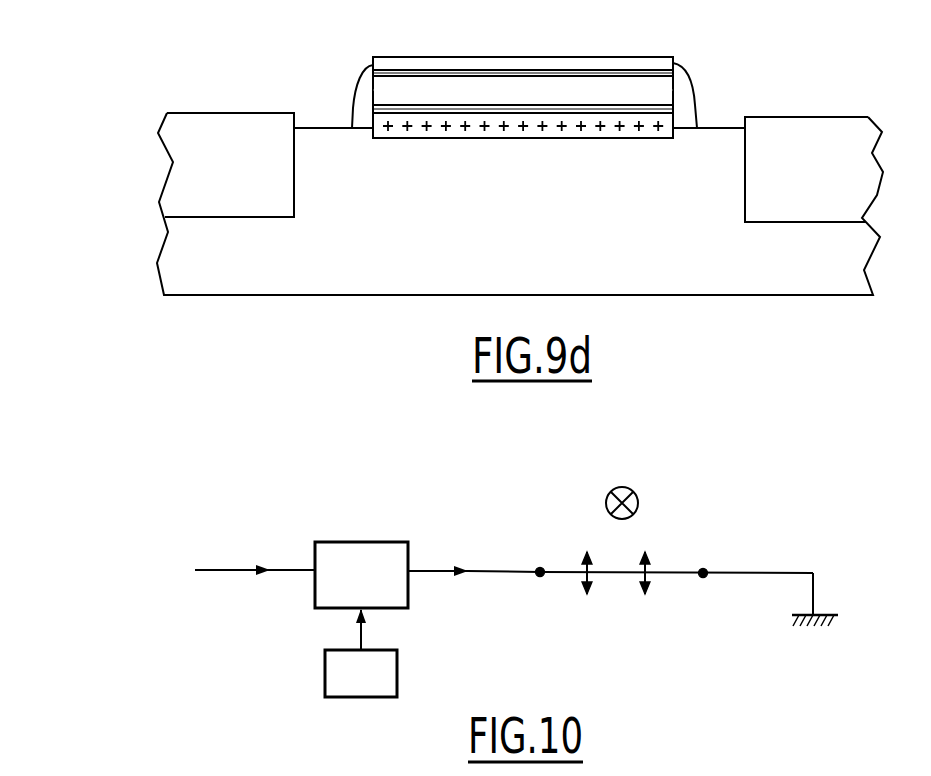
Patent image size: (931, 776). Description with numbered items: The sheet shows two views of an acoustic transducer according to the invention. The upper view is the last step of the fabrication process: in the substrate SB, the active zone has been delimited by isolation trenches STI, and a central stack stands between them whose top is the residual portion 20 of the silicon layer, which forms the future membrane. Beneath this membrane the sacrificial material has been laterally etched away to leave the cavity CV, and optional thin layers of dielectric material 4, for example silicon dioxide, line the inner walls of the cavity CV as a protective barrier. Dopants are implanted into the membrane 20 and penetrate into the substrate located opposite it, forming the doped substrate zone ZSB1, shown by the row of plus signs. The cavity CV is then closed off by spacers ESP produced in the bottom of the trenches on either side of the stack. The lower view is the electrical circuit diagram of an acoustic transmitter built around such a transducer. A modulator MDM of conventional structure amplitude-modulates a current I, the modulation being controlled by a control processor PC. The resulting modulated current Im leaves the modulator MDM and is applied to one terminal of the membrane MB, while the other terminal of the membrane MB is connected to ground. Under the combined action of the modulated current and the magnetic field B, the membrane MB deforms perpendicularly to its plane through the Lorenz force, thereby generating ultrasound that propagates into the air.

In FIG. 9d, the thin layers of dielectric material 4 is at (423, 113).
In FIG. 9d, the cavity CV is at (483, 92).
In FIG. 9d, the residual portion of the silicon layer 20 is at (558, 67).
In FIG. 9d, the spacers ESP is at (362, 98).
In FIG. 9d, the isolation trenches STI is at (246, 182).
In FIG. 9d, the doped substrate zone ZSB1 is at (545, 132).
In FIG. 9d, the substrate SB is at (834, 285).
In FIG. 10, the current I is at (255, 550).
In FIG. 10, the modulator MDM is at (361, 575).
In FIG. 10, the modulated current Im is at (474, 551).
In FIG. 10, the control processor PC is at (361, 653).
In FIG. 10, the magnetic field B is at (699, 470).
In FIG. 10, the membrane MB is at (667, 573).